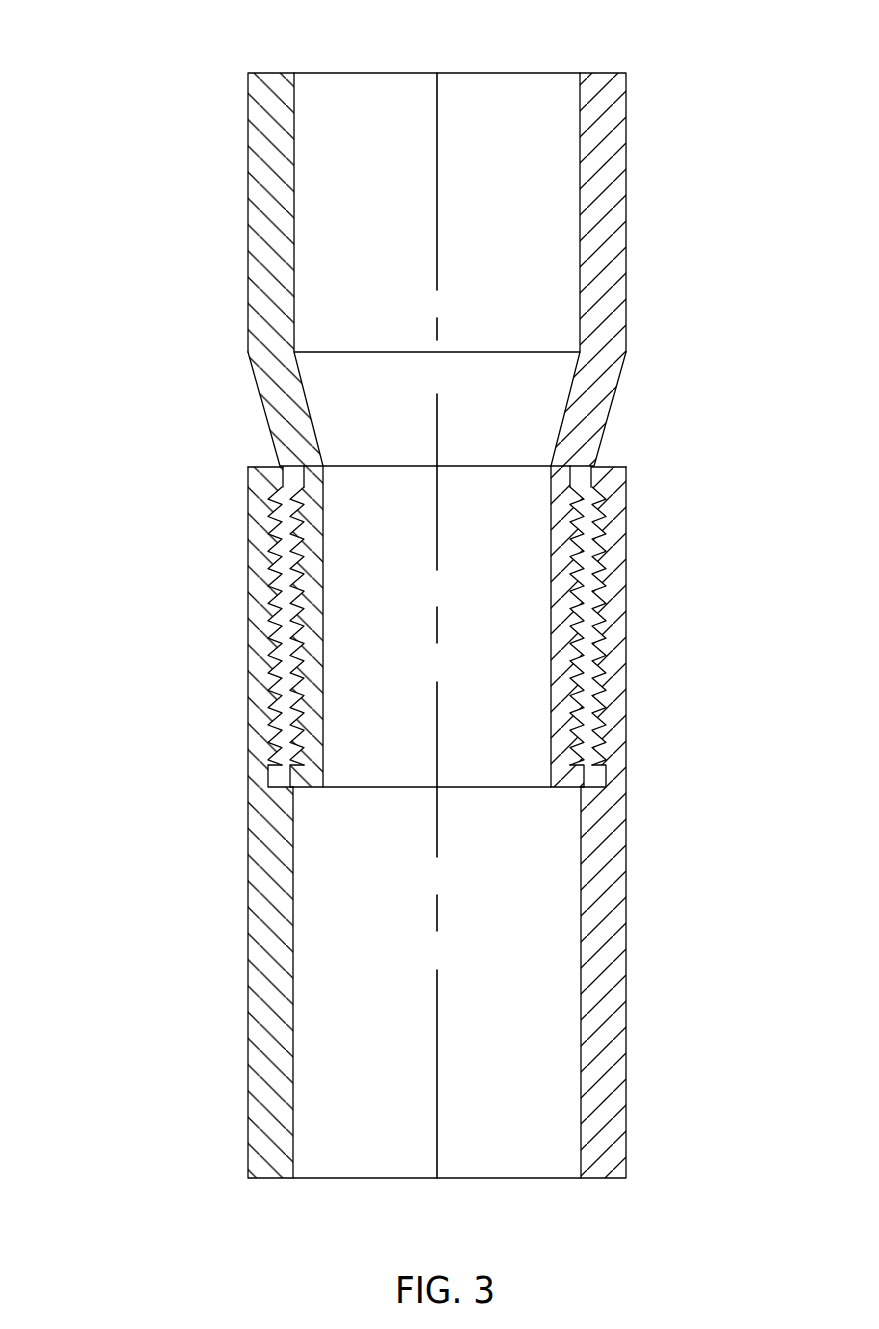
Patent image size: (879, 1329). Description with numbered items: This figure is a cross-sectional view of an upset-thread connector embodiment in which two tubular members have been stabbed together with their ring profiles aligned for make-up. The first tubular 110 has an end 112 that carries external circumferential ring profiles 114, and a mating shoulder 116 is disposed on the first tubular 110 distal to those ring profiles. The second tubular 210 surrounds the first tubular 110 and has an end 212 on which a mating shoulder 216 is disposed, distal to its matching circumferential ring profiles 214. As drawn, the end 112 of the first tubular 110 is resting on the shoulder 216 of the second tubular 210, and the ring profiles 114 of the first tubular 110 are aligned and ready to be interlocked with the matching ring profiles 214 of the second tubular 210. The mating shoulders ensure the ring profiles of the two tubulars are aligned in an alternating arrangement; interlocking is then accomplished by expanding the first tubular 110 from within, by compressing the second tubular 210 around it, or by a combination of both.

The first tubular 110 is at (248, 177).
The end of the first tubular 112 is at (308, 788).
The external circumferential ring profiles 114 is at (300, 620).
The mating shoulder 116 is at (283, 490).
The second tubular 210 is at (626, 982).
The end of the second tubular 212 is at (617, 464).
The matching circumferential ring profiles 214 is at (598, 588).
The mating shoulder 216 is at (605, 772).